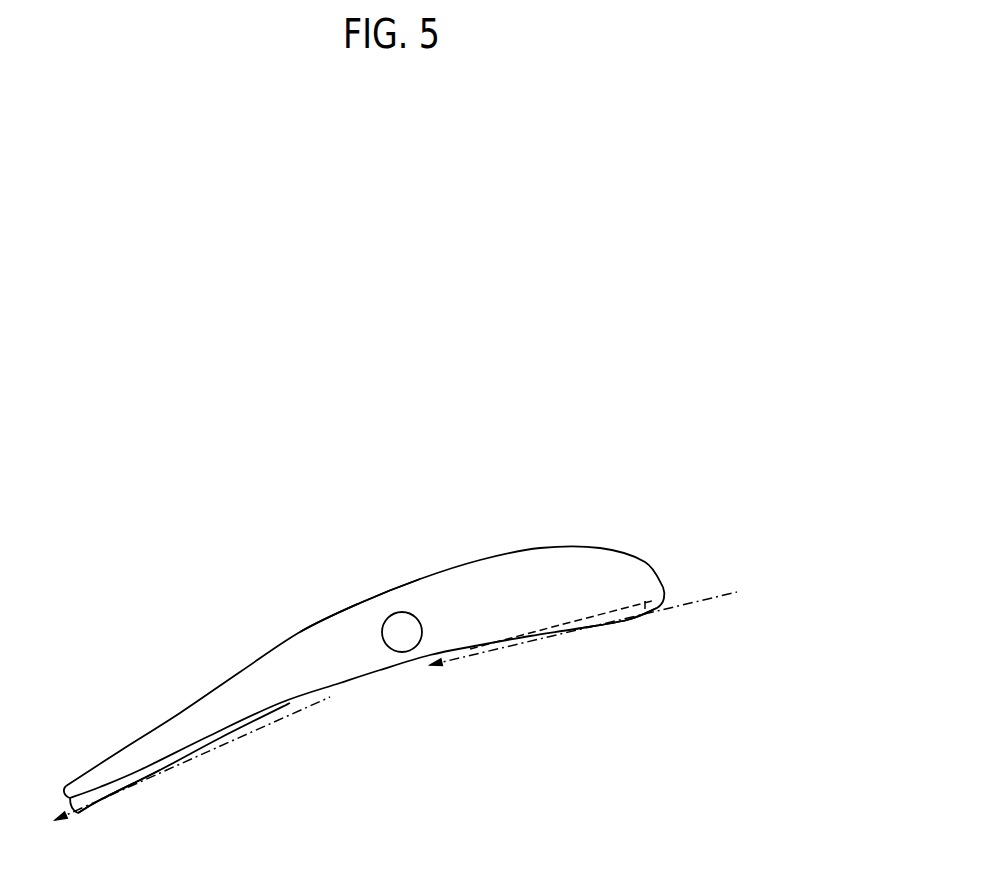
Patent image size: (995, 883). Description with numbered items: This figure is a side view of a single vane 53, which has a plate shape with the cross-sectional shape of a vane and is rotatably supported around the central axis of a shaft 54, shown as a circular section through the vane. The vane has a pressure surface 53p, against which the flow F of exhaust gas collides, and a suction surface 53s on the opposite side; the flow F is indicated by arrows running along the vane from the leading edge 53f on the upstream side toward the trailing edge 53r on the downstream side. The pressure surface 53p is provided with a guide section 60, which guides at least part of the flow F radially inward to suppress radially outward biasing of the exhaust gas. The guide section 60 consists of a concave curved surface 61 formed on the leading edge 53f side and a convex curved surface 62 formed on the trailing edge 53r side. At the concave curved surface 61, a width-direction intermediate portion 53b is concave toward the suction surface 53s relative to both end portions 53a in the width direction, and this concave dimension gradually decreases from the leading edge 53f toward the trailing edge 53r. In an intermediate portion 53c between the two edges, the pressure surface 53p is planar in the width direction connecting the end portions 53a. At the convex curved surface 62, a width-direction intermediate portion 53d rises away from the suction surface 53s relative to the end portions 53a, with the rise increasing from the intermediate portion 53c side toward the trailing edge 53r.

The vane 53 is at (379, 672).
The suction surface 53s is at (318, 627).
The pressure surface 53p is at (352, 682).
The leading edge 53f is at (648, 561).
The trailing edge 53r is at (61, 780).
The both end portions in the width direction 53a is at (623, 624).
The width-direction intermediate portion 53b is at (647, 614).
The intermediate portion 53c is at (383, 669).
The width-direction intermediate portion 53d is at (112, 797).
The shaft 54 is at (384, 614).
The guide section 60 is at (365, 727).
The concave curved surface 61 is at (603, 621).
The convex curved surface 62 is at (157, 778).
The flow of exhaust gas F is at (283, 715).